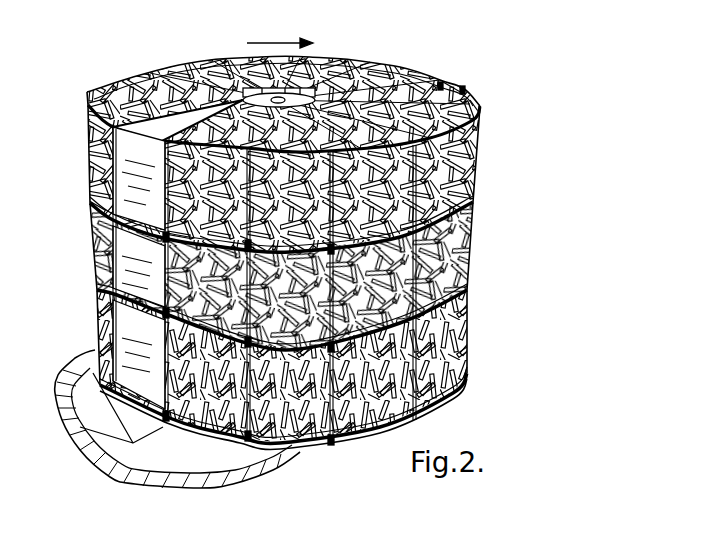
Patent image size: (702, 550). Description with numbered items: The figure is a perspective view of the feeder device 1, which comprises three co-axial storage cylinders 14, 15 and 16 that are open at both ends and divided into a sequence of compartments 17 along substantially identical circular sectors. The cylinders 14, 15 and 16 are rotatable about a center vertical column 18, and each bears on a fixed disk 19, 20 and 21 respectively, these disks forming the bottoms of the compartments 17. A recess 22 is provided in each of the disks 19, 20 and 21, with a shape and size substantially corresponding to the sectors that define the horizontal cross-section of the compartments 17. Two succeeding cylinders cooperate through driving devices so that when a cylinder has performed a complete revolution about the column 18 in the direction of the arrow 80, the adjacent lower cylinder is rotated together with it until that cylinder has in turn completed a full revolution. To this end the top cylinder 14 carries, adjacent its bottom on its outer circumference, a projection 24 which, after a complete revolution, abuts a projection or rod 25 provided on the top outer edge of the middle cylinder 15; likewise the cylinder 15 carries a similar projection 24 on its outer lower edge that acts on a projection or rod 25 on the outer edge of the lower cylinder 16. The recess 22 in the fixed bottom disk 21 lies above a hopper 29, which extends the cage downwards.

The feeder device 1 is at (494, 98).
The top storage cylinder 14 is at (491, 157).
The middle storage cylinder 15 is at (484, 262).
The lower storage cylinder 16 is at (481, 348).
The compartments 17 is at (383, 67).
The center vertical column 18 is at (185, 70).
The fixed disk 19 is at (474, 200).
The fixed disk 20 is at (470, 300).
The fixed bottom disk 21 is at (458, 391).
The recess 22 is at (97, 293).
The projection 24 is at (258, 437).
The projection or rod 25 is at (452, 86).
The hopper 29 is at (137, 425).
The arrow 80 is at (278, 42).